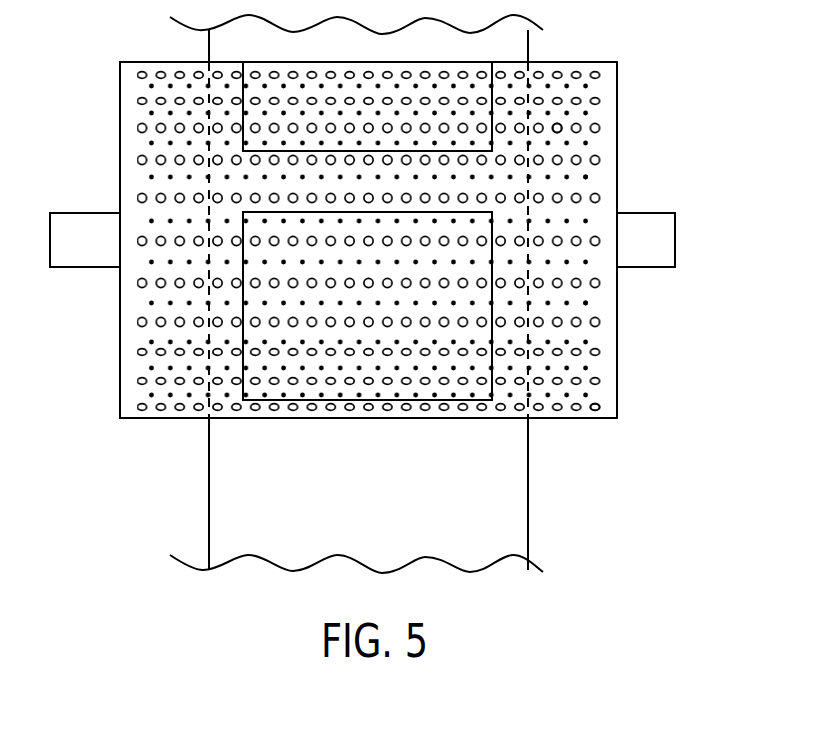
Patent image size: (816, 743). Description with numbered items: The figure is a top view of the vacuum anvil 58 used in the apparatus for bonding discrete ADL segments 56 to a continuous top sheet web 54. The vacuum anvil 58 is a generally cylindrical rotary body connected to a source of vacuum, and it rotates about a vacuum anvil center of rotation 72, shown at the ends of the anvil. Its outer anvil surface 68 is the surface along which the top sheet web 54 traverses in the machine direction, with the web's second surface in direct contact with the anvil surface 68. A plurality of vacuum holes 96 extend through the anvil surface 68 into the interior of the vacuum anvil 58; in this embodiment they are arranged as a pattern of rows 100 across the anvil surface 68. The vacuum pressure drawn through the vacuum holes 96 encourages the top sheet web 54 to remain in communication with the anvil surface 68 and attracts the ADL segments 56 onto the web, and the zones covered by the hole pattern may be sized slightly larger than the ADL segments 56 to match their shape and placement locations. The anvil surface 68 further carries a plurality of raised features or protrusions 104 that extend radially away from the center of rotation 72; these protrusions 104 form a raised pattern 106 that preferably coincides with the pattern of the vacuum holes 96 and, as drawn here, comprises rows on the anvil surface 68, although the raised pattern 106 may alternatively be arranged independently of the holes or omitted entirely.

The top sheet web 54 is at (208, 490).
The ADL segments 56 is at (245, 105).
The vacuum anvil 58 is at (603, 345).
The anvil surface 68 is at (605, 412).
The vacuum anvil center of rotation 72 is at (660, 243).
The vacuum holes 96 is at (555, 124).
The pattern of rows 100 is at (404, 390).
The raised features/protrusions 104 is at (585, 177).
The raised pattern 106 is at (585, 304).